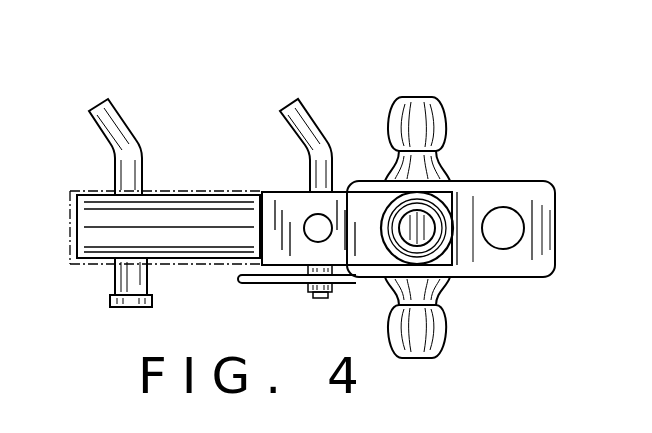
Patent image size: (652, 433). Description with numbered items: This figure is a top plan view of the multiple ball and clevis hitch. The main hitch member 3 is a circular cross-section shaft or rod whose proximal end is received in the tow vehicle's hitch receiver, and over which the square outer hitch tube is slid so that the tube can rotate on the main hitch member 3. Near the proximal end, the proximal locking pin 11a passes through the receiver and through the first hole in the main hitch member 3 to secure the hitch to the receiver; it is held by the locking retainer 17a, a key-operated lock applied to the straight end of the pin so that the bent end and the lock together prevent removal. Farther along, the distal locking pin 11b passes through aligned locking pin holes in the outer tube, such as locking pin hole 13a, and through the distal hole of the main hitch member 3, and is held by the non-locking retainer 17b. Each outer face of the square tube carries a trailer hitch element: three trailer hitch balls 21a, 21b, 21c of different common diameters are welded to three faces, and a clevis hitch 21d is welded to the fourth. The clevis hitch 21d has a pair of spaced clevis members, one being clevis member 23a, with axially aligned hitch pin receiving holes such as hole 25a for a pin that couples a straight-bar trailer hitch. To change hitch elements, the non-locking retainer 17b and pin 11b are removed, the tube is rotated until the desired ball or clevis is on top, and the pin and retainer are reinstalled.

The main hitch member 3 is at (183, 216).
The proximal locking pin 11a is at (131, 118).
The distal locking pin 11b is at (318, 128).
The locking pin hole 13a is at (318, 299).
The locking retainer 17a is at (113, 294).
The non-locking retainer 17b is at (279, 285).
The trailer hitch ball 21a is at (439, 95).
The trailer hitch ball 21b is at (445, 344).
The trailer hitch ball 21c is at (447, 196).
The clevis hitch 21d is at (530, 180).
The clevis member 23a is at (536, 221).
The hitch pin receiving hole 25a is at (522, 239).